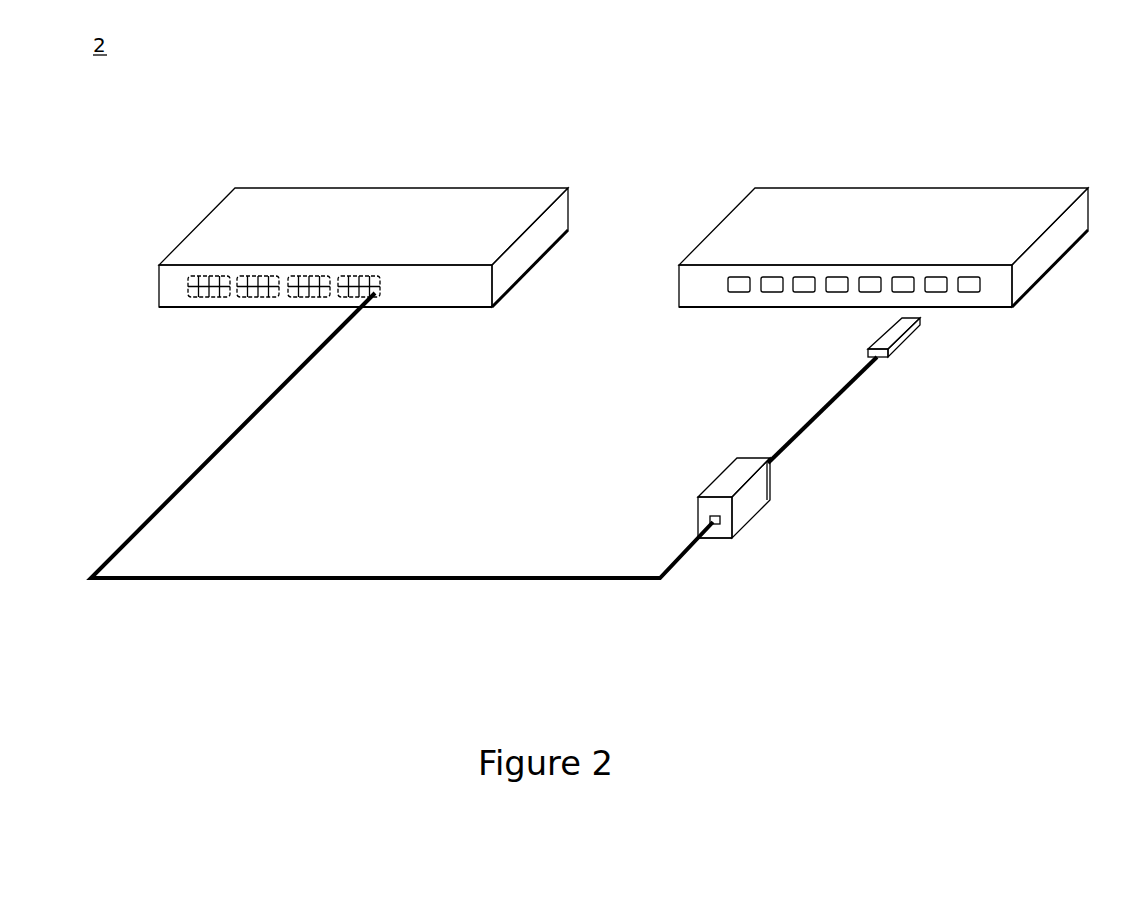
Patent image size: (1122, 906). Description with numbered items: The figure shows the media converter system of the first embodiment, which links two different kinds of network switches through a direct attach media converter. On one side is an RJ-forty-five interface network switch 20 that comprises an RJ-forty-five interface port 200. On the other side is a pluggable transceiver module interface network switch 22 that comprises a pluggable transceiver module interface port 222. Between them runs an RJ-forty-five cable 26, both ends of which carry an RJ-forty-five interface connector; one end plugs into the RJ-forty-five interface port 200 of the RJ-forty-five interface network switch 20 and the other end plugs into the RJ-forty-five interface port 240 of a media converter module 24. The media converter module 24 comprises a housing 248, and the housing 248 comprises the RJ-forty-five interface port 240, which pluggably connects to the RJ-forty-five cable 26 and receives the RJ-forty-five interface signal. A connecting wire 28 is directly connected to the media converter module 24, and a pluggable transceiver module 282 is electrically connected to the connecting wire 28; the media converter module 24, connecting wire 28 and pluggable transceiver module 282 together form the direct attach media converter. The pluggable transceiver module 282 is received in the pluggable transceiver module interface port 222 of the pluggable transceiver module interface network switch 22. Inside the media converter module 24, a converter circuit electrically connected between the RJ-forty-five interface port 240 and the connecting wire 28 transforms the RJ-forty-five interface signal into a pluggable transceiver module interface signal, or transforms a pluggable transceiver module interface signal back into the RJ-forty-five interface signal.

The RJ-45 interface network switch 20 is at (309, 188).
The RJ-45 interface port 200 is at (375, 297).
The RJ-45 cable 26 is at (190, 475).
The pluggable transceiver module interface network switch 22 is at (850, 188).
The pluggable transceiver module interface port 222 is at (938, 292).
The pluggable transceiver module 282 is at (902, 347).
The connecting wire 28 is at (820, 420).
The media converter module 24 is at (727, 465).
The RJ-45 interface port 240 is at (712, 518).
The housing 248 is at (723, 538).